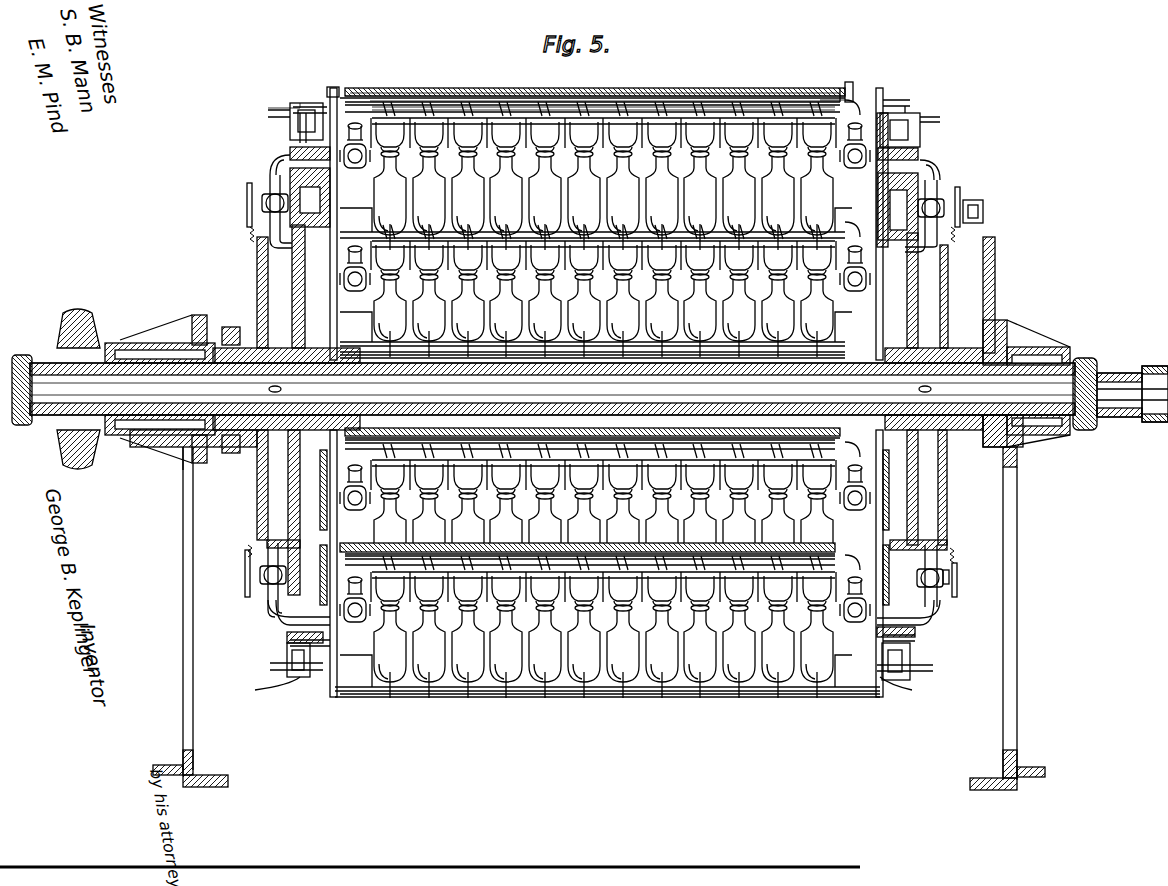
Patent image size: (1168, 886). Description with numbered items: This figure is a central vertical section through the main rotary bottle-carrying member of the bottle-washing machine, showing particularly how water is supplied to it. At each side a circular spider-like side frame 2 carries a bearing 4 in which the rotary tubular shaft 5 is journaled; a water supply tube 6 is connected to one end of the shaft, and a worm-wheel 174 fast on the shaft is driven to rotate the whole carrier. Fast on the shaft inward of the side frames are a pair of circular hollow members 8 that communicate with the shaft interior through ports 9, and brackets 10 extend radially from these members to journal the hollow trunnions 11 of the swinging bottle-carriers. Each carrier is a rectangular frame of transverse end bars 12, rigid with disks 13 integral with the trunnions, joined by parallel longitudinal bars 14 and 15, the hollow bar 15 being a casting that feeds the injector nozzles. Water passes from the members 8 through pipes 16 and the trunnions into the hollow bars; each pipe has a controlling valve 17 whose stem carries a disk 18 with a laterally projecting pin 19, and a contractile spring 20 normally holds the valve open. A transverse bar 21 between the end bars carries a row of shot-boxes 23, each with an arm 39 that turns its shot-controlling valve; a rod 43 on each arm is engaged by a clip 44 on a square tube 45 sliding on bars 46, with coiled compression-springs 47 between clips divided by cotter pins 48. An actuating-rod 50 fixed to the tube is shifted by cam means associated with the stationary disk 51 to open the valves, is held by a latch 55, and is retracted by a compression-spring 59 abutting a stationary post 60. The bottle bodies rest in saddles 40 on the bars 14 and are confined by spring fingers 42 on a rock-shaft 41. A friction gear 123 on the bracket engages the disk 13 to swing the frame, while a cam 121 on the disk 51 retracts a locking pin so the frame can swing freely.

The side frame 2 is at (183, 568).
The bearing 4 is at (170, 343).
The rotary tubular shaft 5 is at (118, 348).
The water supply tube 6 is at (1150, 366).
The circular hollow member 8 is at (257, 286).
The port 9 is at (928, 363).
The bracket 10 is at (262, 178).
The hollow trunnion 11 is at (290, 150).
The transverse end bar 12 is at (298, 105).
The disk 13 is at (268, 116).
The longitudinal bar 14 is at (855, 218).
The hollow bar 15 is at (845, 95).
The pipe 16 is at (270, 160).
The controlling valve 17 is at (268, 243).
The disk 18 is at (262, 200).
The pin 19 is at (247, 190).
The contractile spring 20 is at (250, 232).
The transverse bar 21 is at (368, 100).
The shot-box 23 is at (603, 400).
The arm 39 is at (572, 96).
The saddle 40 is at (512, 710).
The rock-shaft 41 is at (795, 706).
The spring finger 42 is at (725, 710).
The rod 43 is at (484, 118).
The clip 44 is at (672, 100).
The square tube 45 is at (822, 98).
The bar 46 is at (856, 88).
The coiled compression-spring 47 is at (765, 108).
The cotter pin 48 is at (726, 105).
The actuating-rod 50 is at (597, 391).
The stationary disk 51 is at (1000, 280).
The latch 55 is at (340, 88).
The compression-spring 59 is at (432, 98).
The stationary post 60 is at (400, 96).
The cam 121 is at (985, 210).
The friction gear 123 is at (268, 112).
The worm-wheel 174 is at (119, 473).